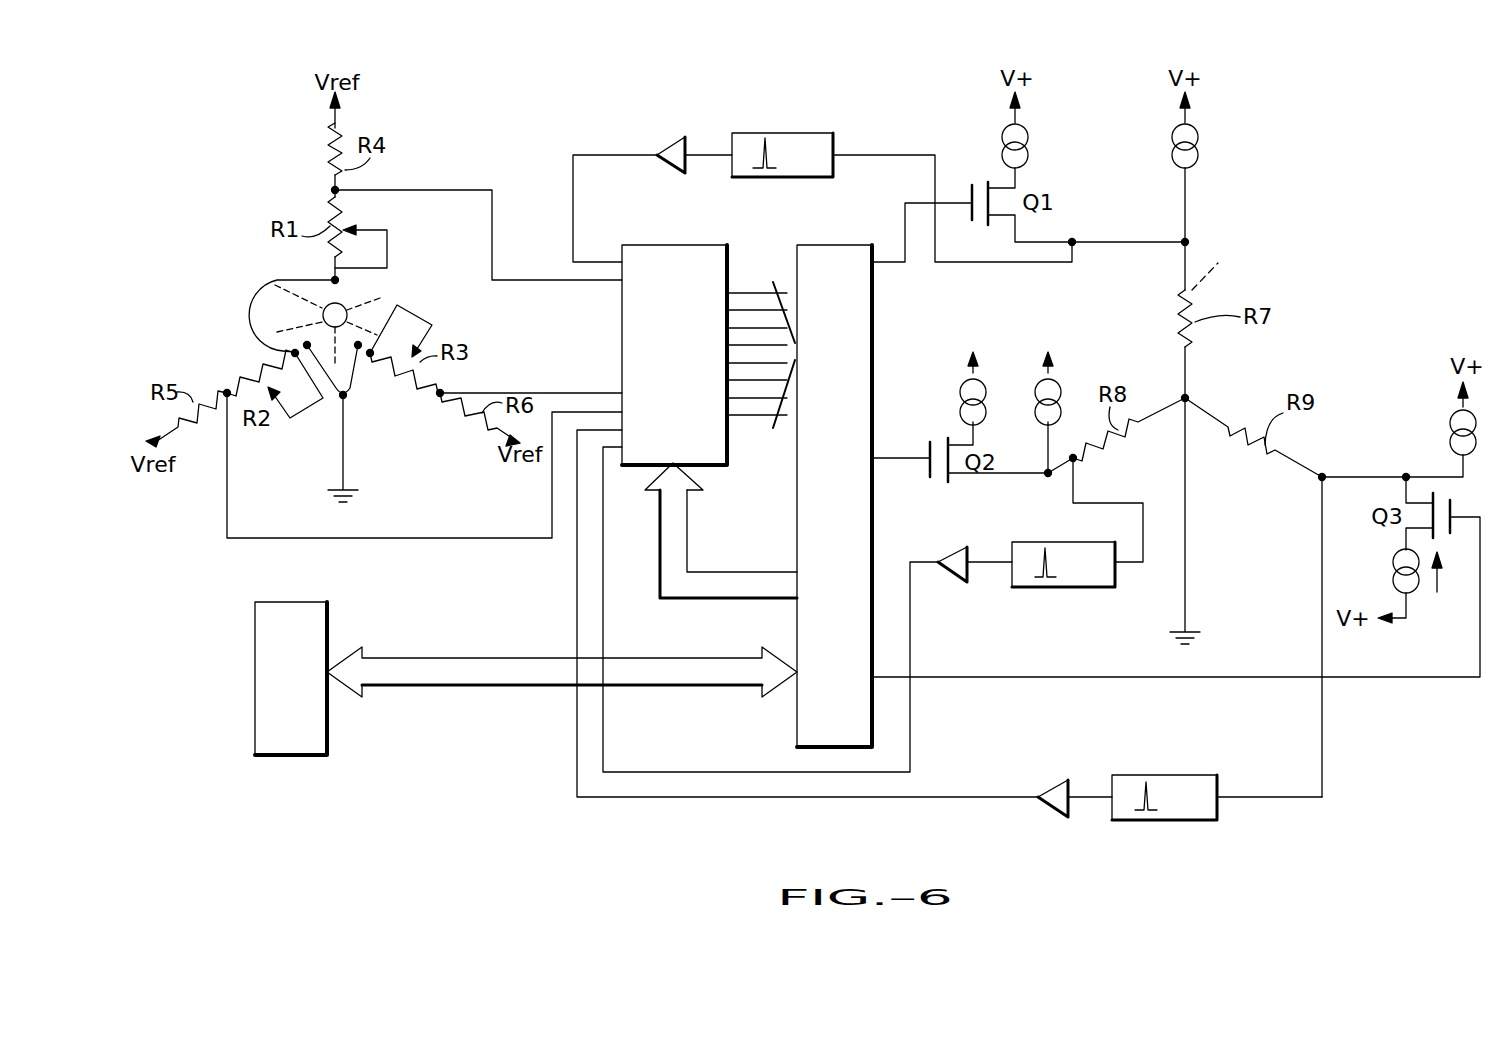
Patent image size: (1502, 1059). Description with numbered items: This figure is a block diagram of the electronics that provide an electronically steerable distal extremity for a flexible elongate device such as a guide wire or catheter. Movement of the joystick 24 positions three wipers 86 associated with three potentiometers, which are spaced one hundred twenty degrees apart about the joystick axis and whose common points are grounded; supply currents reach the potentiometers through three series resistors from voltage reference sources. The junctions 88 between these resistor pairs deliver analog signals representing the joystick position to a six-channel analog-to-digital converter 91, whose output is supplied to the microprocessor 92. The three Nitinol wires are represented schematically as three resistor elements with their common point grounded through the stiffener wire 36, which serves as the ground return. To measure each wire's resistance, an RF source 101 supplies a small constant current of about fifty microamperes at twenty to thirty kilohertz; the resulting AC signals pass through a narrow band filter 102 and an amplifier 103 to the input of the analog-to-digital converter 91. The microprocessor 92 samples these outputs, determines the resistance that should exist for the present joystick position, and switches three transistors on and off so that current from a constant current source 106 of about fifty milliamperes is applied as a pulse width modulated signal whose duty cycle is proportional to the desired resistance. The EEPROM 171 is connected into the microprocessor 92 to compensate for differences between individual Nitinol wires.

The joystick 24 is at (258, 300).
The stiffener wire 36 is at (1185, 530).
The wipers 86 is at (387, 248).
The junctions 88 is at (330, 192).
The analog-to-digital converter 91 is at (648, 245).
The microprocessor 92 is at (797, 720).
The RF source 101 is at (1170, 152).
The narrow band filter 102 is at (740, 177).
The amplifier 103 is at (677, 137).
The constant current source 106 is at (1003, 148).
The EEPROM 171 is at (268, 755).